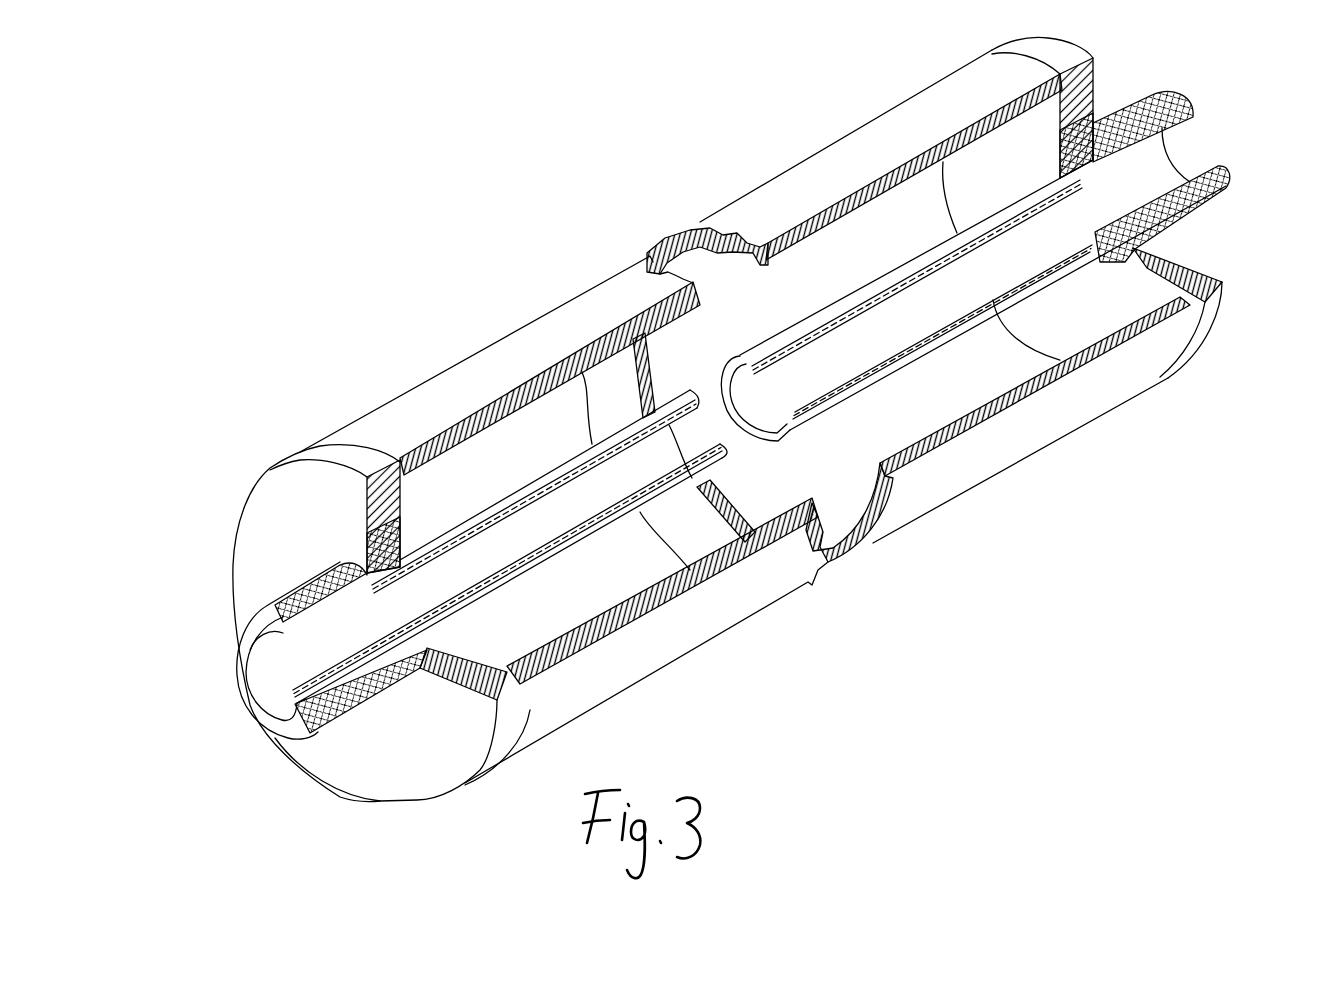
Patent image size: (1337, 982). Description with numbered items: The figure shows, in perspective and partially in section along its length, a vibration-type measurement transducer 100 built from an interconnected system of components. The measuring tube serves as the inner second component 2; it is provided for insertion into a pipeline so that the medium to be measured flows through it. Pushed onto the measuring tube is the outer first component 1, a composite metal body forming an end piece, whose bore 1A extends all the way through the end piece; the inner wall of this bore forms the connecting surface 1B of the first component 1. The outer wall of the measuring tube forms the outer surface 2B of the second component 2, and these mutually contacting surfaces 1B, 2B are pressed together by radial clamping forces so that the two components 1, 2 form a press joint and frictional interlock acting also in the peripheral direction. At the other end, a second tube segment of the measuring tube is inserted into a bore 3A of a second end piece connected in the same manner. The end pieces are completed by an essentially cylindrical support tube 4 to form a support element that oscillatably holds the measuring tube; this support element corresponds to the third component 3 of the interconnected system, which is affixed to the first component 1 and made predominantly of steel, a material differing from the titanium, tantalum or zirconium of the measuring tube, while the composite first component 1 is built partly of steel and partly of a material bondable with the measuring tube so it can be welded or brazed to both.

The measurement transducer 100 is at (667, 176).
The first component 1 is at (273, 603).
The bore 1A is at (280, 745).
The connecting surface 1B is at (388, 652).
The second component 2 is at (250, 705).
The outer surface 2B is at (307, 708).
The third component 3 is at (1190, 218).
The bore 3A is at (1193, 140).
The support tube 4 is at (987, 463).